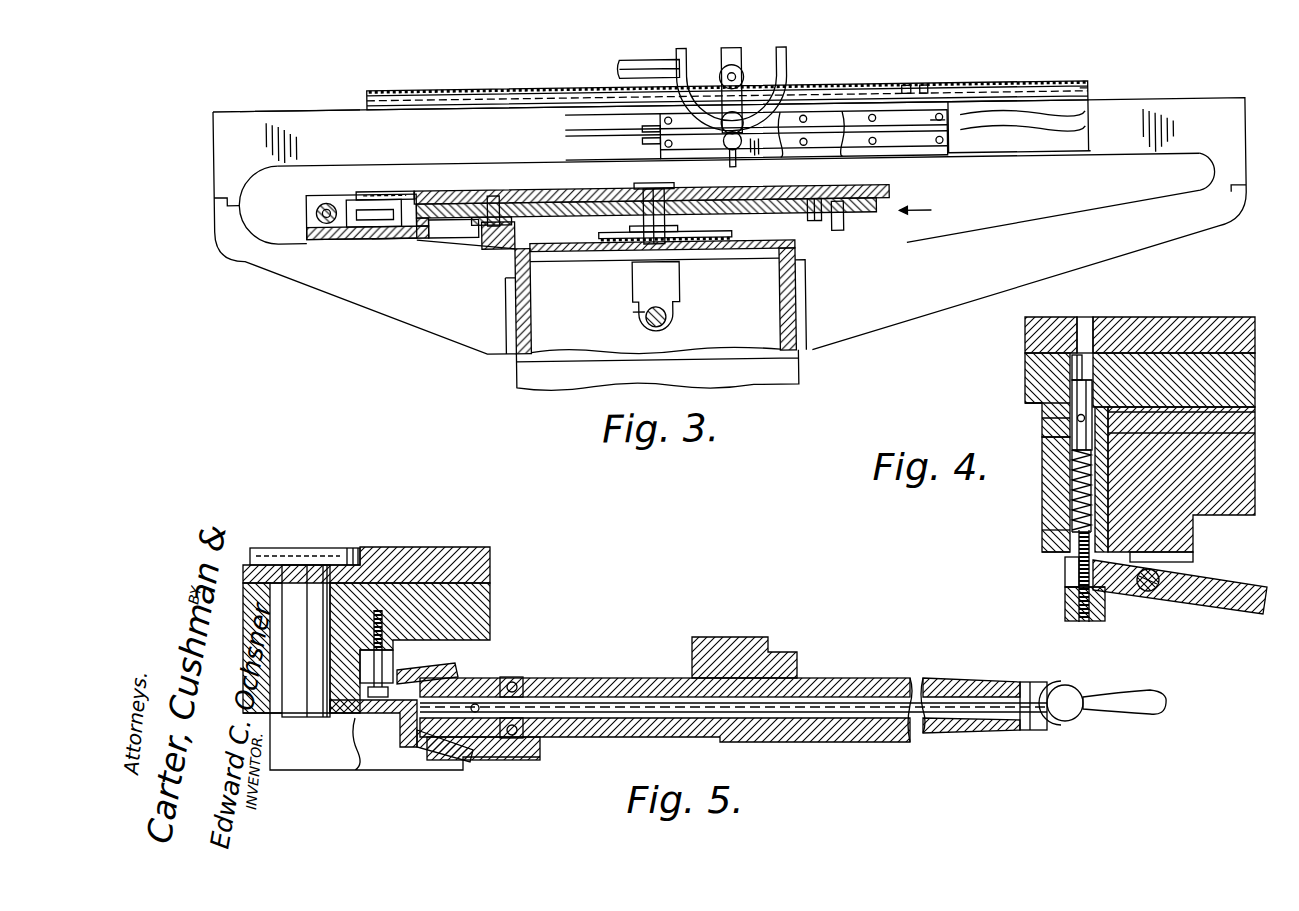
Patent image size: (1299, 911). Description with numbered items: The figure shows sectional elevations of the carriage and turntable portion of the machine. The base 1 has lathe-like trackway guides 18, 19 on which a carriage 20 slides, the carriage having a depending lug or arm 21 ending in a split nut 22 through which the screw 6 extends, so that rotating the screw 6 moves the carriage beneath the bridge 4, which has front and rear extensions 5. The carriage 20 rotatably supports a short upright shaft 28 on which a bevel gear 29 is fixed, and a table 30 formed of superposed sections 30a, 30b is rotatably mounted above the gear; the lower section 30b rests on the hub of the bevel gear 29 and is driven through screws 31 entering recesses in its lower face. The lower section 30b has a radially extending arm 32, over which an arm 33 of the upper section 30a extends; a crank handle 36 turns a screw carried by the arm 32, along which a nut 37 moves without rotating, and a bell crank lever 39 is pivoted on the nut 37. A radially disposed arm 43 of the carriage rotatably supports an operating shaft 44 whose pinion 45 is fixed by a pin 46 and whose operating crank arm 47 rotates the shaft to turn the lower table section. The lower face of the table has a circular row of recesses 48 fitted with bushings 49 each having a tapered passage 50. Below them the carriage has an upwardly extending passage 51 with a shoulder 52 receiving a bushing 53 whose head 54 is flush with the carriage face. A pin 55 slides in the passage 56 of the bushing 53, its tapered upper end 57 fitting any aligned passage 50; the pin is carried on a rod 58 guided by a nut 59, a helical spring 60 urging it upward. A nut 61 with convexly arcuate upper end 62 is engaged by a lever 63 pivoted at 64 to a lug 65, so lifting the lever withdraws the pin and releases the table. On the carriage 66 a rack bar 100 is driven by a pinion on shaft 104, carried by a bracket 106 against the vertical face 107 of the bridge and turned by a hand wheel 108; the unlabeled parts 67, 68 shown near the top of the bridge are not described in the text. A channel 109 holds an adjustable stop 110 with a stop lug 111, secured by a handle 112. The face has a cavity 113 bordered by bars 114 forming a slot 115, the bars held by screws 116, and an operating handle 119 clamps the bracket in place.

In FIG. 3, the base 1 is at (513, 381).
In FIG. 3, the bridge 4 is at (505, 148).
In FIG. 3, the front and rear extensions 5 is at (226, 198).
In FIG. 3, the screw 6 is at (630, 318).
In FIG. 3, the trackway guide 18 is at (803, 300).
In FIG. 3, the trackway guide 19 is at (528, 300).
In FIG. 3, the carriage 20 is at (862, 252).
In FIG. 4, the carriage 20 is at (1246, 457).
In FIG. 5, the carriage 20 is at (357, 730).
In FIG. 3, the depending lug or arm 21 is at (677, 295).
In FIG. 3, the split nut 22 is at (662, 328).
In FIG. 3, the upright shaft 28 is at (642, 200).
In FIG. 5, the upright shaft 28 is at (316, 550).
In FIG. 3, the bevel gear 29 is at (700, 250).
In FIG. 5, the bevel gear 29 is at (456, 664).
In FIG. 3, the table 30 is at (931, 210).
In FIG. 3, the upper table section 30a is at (888, 200).
In FIG. 4, the upper table section 30a is at (1205, 317).
In FIG. 5, the upper table section 30a is at (490, 576).
In FIG. 3, the lower table section 30b is at (862, 225).
In FIG. 4, the lower table section 30b is at (1240, 366).
In FIG. 5, the lower table section 30b is at (490, 614).
In FIG. 3, the screws 31 is at (806, 224).
In FIG. 5, the screws 31 is at (388, 618).
In FIG. 3, the radially extending arm 32 is at (380, 242).
In FIG. 3, the arm 33 is at (400, 196).
In FIG. 3, the crank handle 36 is at (312, 210).
In FIG. 3, the nut 37 is at (315, 215).
In FIG. 3, the bell crank lever 39 is at (390, 242).
In FIG. 5, the radially disposed arm 43 is at (722, 637).
In FIG. 5, the operating shaft 44 is at (645, 700).
In FIG. 5, the pinion 45 is at (470, 752).
In FIG. 5, the pin 46 is at (500, 761).
In FIG. 5, the operating crank arm 47 is at (1068, 722).
In FIG. 4, the recesses 48 is at (1090, 337).
In FIG. 3, the bushing 49 is at (490, 232).
In FIG. 4, the bushing 49 is at (1040, 366).
In FIG. 4, the passage 50 is at (1077, 355).
In FIG. 4, the upwardly extending passage 51 is at (1056, 506).
In FIG. 4, the upwardly facing shoulder 52 is at (1030, 405).
In FIG. 4, the bushing 53 is at (1056, 531).
In FIG. 4, the head 54 is at (1240, 412).
In FIG. 4, the pin 55 is at (1075, 428).
In FIG. 4, the passage 56 is at (1240, 433).
In FIG. 4, the tapered upper end 57 is at (1075, 390).
In FIG. 4, the rod 58 is at (1065, 572).
In FIG. 4, the nut 59 is at (1060, 551).
In FIG. 4, the helical spring 60 is at (1072, 480).
In FIG. 4, the nut 61 is at (1105, 598).
In FIG. 4, the upper end 62 is at (1065, 601).
In FIG. 4, the lever 63 is at (1215, 604).
In FIG. 4, the pivot 64 is at (1150, 591).
In FIG. 4, the lug 65 is at (1193, 557).
In FIG. 3, the carriage 66 is at (622, 72).
In FIG. 3, the frame rail 67 is at (272, 112).
In FIG. 3, the frame rail 68 is at (330, 112).
In FIG. 3, the rack bar 100 is at (1060, 93).
In FIG. 3, the shaft 104 is at (625, 108).
In FIG. 3, the bracket 106 is at (778, 88).
In FIG. 3, the vertical face 107 is at (835, 165).
In FIG. 3, the hand wheel 108 is at (782, 152).
In FIG. 3, the channel 109 is at (1090, 100).
In FIG. 3, the adjustable stop 110 is at (927, 95).
In FIG. 3, the stop lug 111 is at (905, 95).
In FIG. 3, the handle 112 is at (960, 128).
In FIG. 3, the recess or cavity 113 is at (935, 135).
In FIG. 3, the bars 114 is at (1020, 150).
In FIG. 3, the slot 115 is at (642, 136).
In FIG. 3, the screws 116 is at (642, 148).
In FIG. 3, the operating handle 119 is at (729, 168).